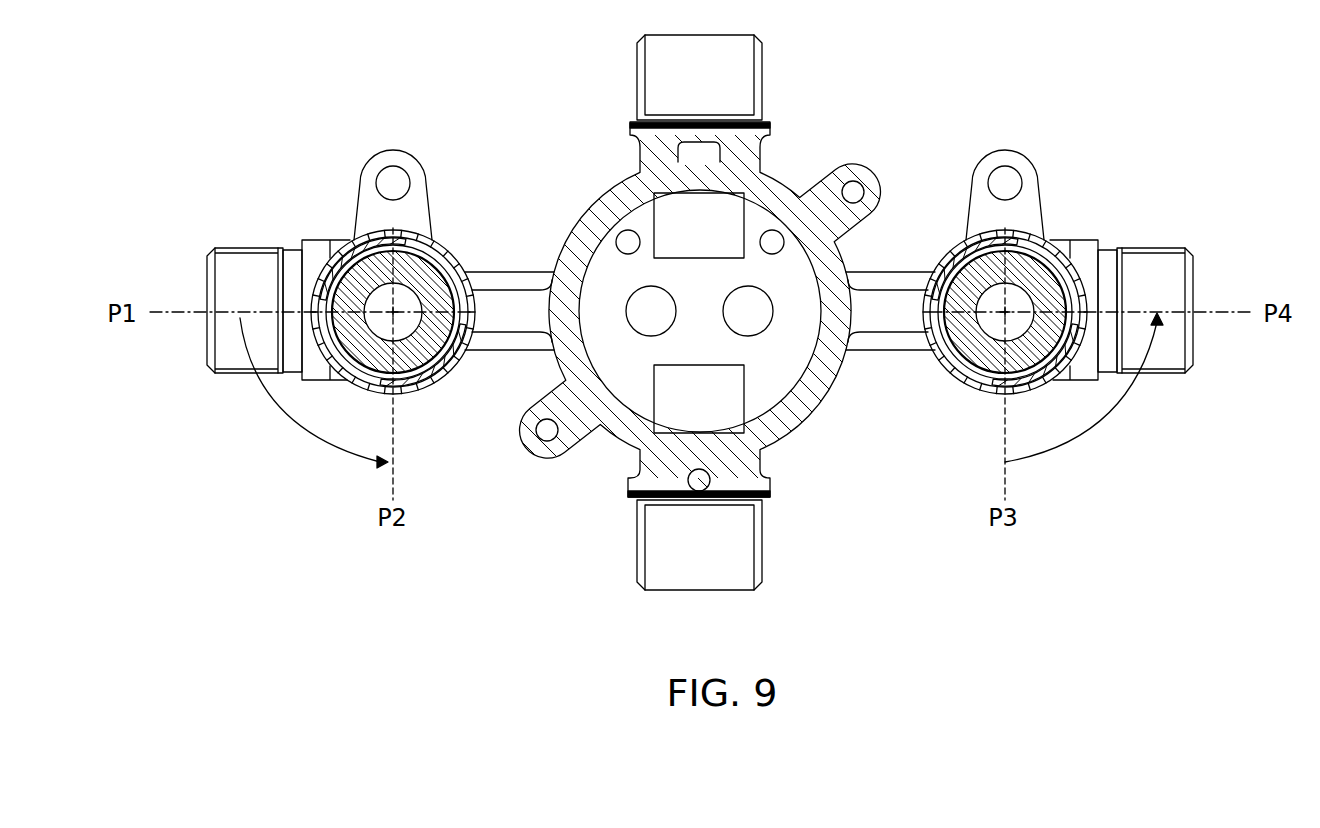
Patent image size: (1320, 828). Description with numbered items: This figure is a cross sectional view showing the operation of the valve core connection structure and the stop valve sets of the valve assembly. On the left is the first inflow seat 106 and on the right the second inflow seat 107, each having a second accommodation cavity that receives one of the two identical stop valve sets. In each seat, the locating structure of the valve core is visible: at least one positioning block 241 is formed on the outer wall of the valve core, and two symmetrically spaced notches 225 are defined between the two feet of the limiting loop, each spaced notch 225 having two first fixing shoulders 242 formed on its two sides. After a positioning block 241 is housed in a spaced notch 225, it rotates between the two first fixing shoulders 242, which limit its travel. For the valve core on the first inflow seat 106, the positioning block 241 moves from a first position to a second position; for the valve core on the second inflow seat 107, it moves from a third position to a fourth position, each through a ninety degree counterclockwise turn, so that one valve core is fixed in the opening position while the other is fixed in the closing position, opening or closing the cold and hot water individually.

The first inflow seat 106 is at (465, 268).
The second inflow seat 107 is at (936, 255).
The spaced notch 225 is at (452, 254).
The positioning block 241 is at (300, 303).
The first fixing shoulder 242 is at (328, 303).